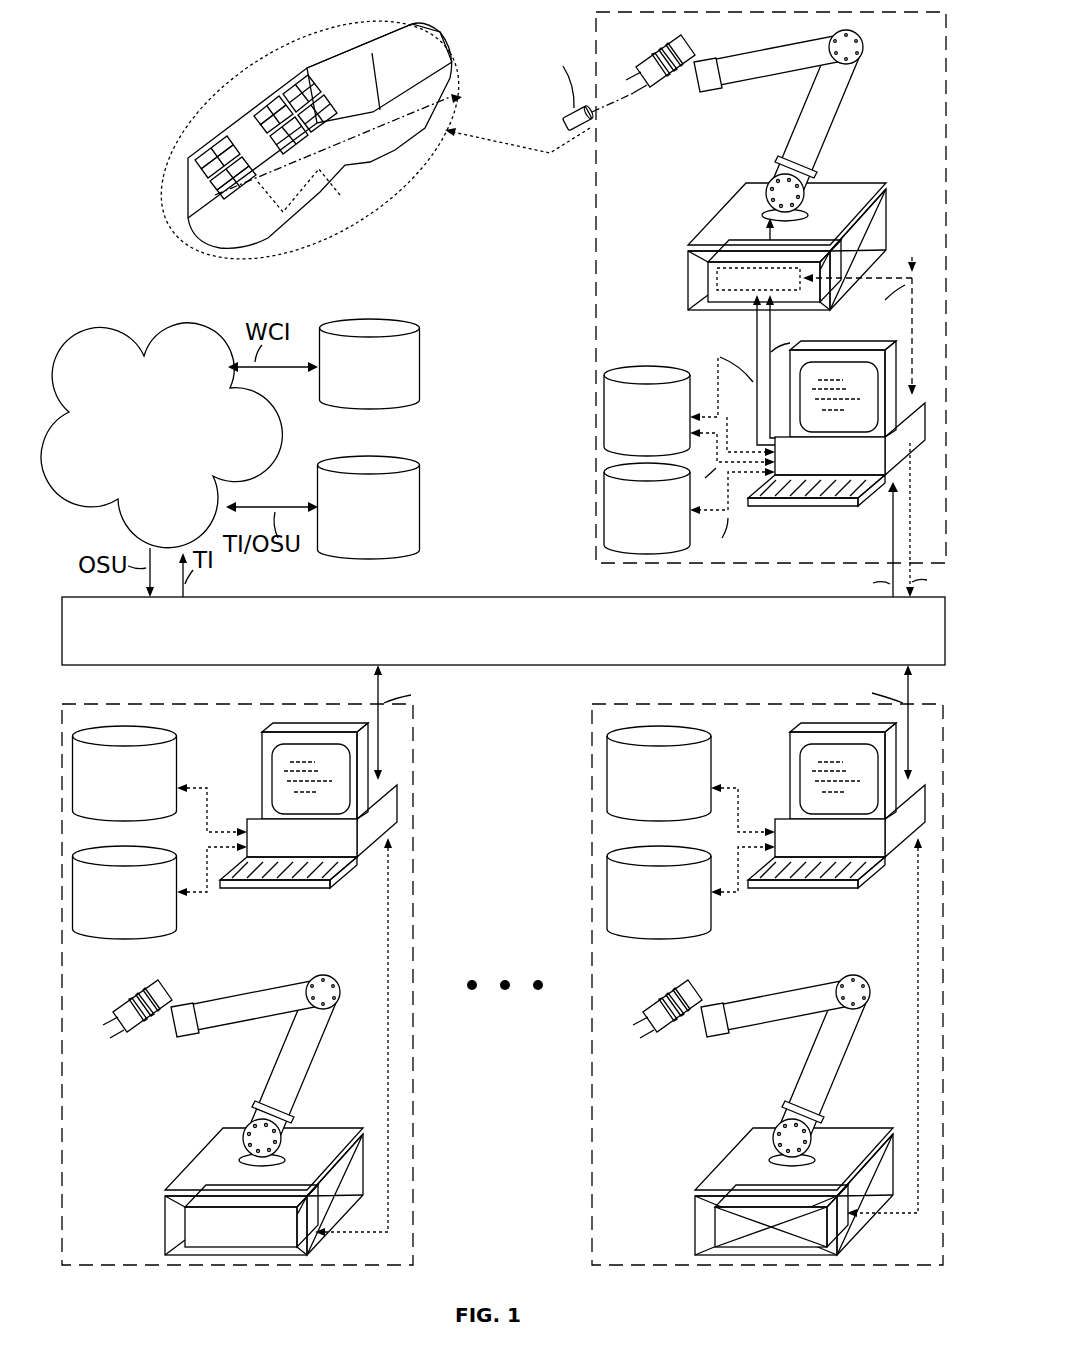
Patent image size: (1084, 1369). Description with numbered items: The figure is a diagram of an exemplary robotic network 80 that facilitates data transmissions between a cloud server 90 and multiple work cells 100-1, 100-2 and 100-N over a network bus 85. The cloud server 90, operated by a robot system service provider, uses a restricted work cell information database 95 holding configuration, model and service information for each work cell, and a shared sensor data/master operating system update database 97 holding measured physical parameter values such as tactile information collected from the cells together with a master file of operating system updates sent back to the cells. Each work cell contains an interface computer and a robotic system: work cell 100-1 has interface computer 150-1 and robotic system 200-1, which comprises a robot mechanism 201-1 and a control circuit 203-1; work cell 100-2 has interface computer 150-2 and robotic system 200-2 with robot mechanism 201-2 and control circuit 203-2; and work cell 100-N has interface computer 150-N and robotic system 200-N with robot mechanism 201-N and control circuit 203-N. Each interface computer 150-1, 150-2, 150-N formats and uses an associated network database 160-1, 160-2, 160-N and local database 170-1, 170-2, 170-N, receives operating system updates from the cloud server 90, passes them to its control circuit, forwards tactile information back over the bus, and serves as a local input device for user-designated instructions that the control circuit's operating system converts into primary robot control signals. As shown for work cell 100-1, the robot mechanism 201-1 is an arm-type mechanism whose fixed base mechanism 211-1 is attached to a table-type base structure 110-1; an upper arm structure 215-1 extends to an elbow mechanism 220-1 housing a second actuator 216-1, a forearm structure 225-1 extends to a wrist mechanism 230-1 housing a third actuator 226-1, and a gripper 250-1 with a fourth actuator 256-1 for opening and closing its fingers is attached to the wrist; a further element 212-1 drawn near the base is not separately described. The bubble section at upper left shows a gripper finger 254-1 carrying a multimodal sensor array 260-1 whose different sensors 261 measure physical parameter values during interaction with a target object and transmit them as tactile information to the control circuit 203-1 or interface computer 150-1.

The robotic network 80 is at (118, 45).
The gripper finger 254-1 is at (313, 58).
The multimodal sensor array 260-1 is at (259, 124).
The sensors 261 is at (233, 152).
The cloud server 90 is at (166, 465).
The work cell information database 95 is at (381, 338).
The sensor data/master operating system update database 97 is at (381, 476).
The network bus 85 is at (638, 644).
The work cell 100-1 is at (660, 297).
The robotic system 200-1 is at (754, 170).
The robot mechanism 201-1 is at (774, 146).
The control circuit 203-1 is at (757, 248).
The gripper 250-1 is at (648, 50).
The third actuator 226-1 is at (698, 66).
The forearm structure 225-1 is at (793, 55).
The elbow mechanism 220-1 is at (852, 38).
The second actuator 216-1 is at (859, 60).
The upper arm structure 215-1 is at (828, 104).
The table-type base structure 110-1 is at (822, 170).
The base joint 212-1 is at (821, 203).
The base mechanism 211-1 is at (810, 212).
The fourth actuator 256-1 is at (650, 92).
The wrist mechanism 230-1 is at (718, 90).
The network database 160-1 is at (673, 450).
The local database 170-1 is at (673, 545).
The interface computer 150-1 is at (860, 472).
The work cell 100-2 is at (370, 958).
The network database 160-2 is at (154, 799).
The local database 170-2 is at (154, 922).
The interface computer 150-2 is at (332, 854).
The robotic system 200-2 is at (225, 1115).
The robot mechanism 201-2 is at (251, 1089).
The control circuit 203-2 is at (232, 1193).
The work cell 100-N is at (886, 958).
The network database 160-N is at (690, 799).
The local database 170-N is at (690, 922).
The interface computer 150-N is at (862, 854).
The robotic system 200-N is at (755, 1115).
The robot mechanism 201-N is at (781, 1089).
The control circuit 203-N is at (762, 1193).